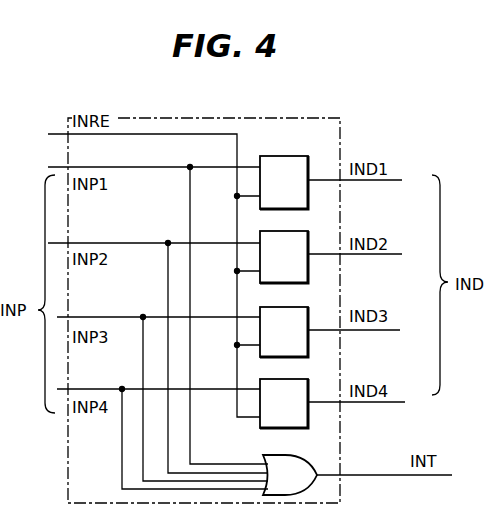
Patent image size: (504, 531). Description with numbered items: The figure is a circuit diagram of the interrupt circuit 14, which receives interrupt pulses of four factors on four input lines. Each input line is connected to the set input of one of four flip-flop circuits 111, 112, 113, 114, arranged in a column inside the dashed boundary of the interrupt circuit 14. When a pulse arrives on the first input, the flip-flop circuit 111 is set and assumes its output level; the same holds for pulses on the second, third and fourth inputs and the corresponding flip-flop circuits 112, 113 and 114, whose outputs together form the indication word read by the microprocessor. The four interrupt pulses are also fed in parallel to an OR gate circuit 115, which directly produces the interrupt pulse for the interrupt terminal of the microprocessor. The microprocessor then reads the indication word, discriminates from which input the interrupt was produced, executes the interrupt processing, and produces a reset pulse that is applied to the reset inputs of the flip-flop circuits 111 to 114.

The flip-flop circuit 111 is at (280, 156).
The flip-flop circuit 112 is at (285, 231).
The flip-flop circuit 113 is at (285, 307).
The flip-flop circuit 114 is at (285, 379).
The OR gate circuit 115 is at (292, 455).
The interrupt circuit 14 is at (340, 487).